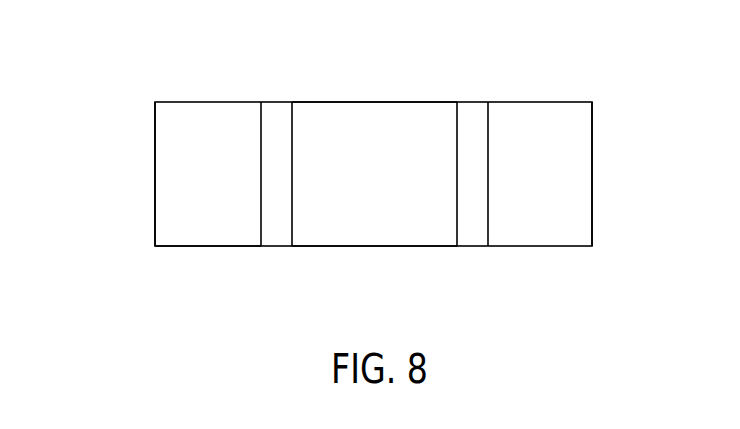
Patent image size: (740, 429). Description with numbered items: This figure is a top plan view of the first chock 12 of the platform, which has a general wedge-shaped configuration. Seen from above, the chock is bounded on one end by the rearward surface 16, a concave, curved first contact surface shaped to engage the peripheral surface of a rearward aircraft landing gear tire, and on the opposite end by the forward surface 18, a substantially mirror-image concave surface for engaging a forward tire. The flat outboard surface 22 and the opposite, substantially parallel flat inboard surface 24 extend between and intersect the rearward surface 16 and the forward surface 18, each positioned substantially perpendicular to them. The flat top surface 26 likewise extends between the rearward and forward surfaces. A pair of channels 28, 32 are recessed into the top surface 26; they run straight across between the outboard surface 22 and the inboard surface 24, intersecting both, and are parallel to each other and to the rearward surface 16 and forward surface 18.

The first chock 12 is at (135, 129).
The rearward surface 16 is at (155, 185).
The forward surface 18 is at (592, 173).
The outboard surface 22 is at (220, 248).
The inboard surface 24 is at (375, 102).
The top surface 26 is at (370, 237).
The channel 28 is at (275, 105).
The channel 32 is at (473, 105).